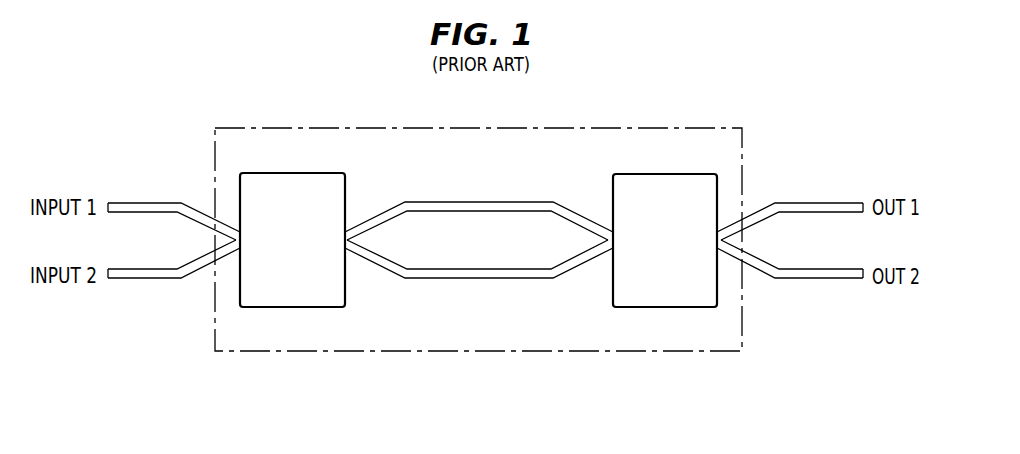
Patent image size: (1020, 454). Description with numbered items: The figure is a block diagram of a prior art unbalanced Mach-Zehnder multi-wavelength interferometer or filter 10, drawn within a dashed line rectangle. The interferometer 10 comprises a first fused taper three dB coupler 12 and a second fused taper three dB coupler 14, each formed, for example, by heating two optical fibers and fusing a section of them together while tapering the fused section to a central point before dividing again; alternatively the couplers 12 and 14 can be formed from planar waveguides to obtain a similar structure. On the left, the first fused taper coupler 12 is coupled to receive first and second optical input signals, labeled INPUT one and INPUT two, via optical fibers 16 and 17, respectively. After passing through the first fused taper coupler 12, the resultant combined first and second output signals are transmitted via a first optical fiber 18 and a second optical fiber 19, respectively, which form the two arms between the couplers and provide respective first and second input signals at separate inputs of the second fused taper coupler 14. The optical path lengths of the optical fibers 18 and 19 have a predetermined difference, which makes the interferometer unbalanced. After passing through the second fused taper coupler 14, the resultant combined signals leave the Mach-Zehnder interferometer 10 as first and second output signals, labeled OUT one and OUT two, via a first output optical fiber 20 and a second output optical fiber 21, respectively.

The unbalanced Mach-Zehnder multi-wavelength interferometer 10 is at (382, 128).
The first fused taper 3 dB coupler 12 is at (280, 173).
The second fused taper 3 dB coupler 14 is at (650, 174).
The optical fiber 16 is at (129, 202).
The optical fiber 17 is at (129, 279).
The first optical fiber 18 is at (440, 201).
The second optical fiber 19 is at (440, 279).
The first output optical fiber 20 is at (812, 202).
The second output optical fiber 21 is at (812, 279).